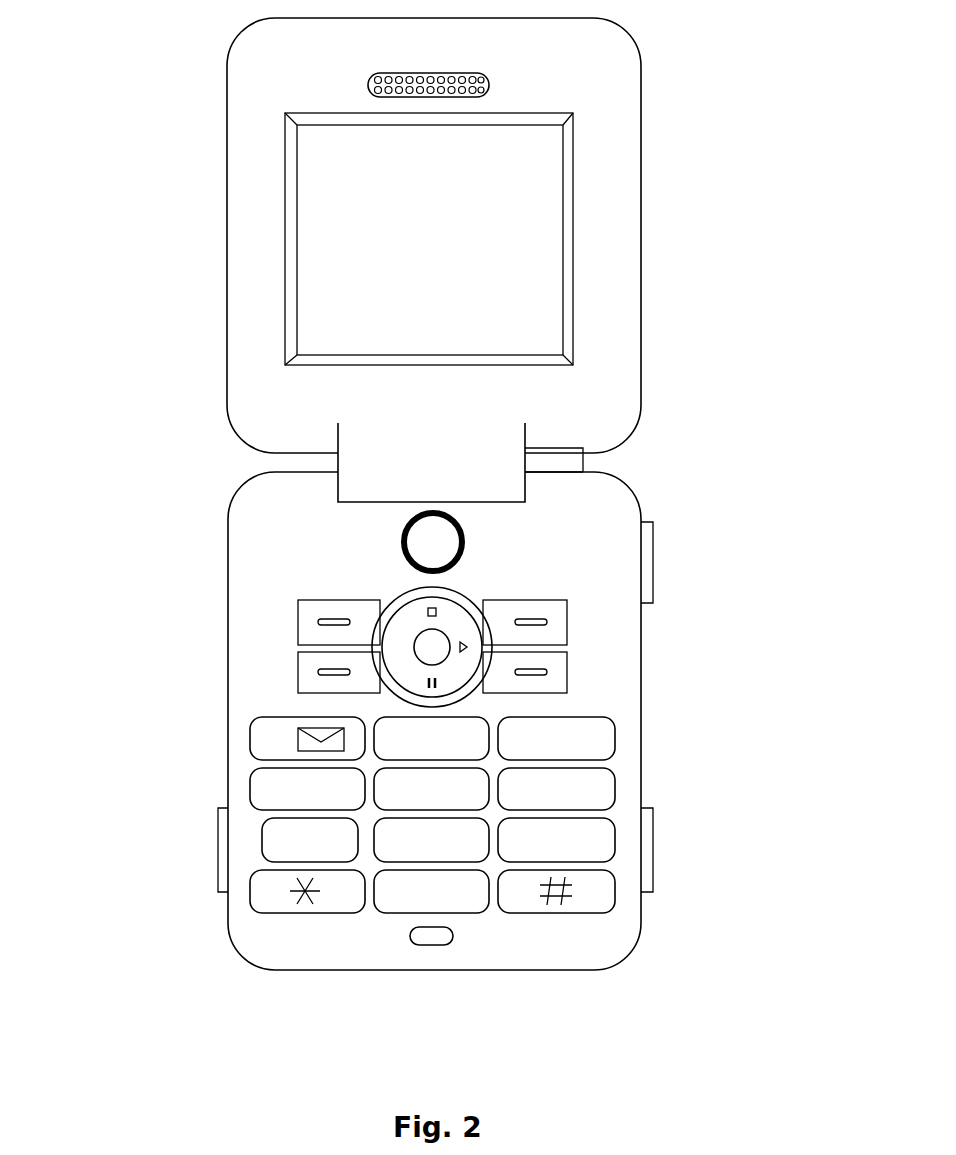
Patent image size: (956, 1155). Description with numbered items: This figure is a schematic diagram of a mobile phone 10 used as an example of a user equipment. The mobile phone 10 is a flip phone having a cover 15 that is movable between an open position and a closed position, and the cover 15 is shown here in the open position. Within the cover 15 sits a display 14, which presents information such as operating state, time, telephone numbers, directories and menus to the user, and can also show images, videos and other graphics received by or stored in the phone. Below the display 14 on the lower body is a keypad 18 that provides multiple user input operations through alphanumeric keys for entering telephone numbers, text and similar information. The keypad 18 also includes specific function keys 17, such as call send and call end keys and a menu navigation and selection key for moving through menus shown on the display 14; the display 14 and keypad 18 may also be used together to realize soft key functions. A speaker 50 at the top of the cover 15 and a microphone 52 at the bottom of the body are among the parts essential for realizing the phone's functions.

The mobile phone 10 is at (150, 107).
The display 14 is at (310, 256).
The cover 15 is at (227, 298).
The specific function keys 17 is at (428, 647).
The keypad 18 is at (333, 923).
The speaker 50 is at (497, 85).
The microphone 52 is at (437, 952).